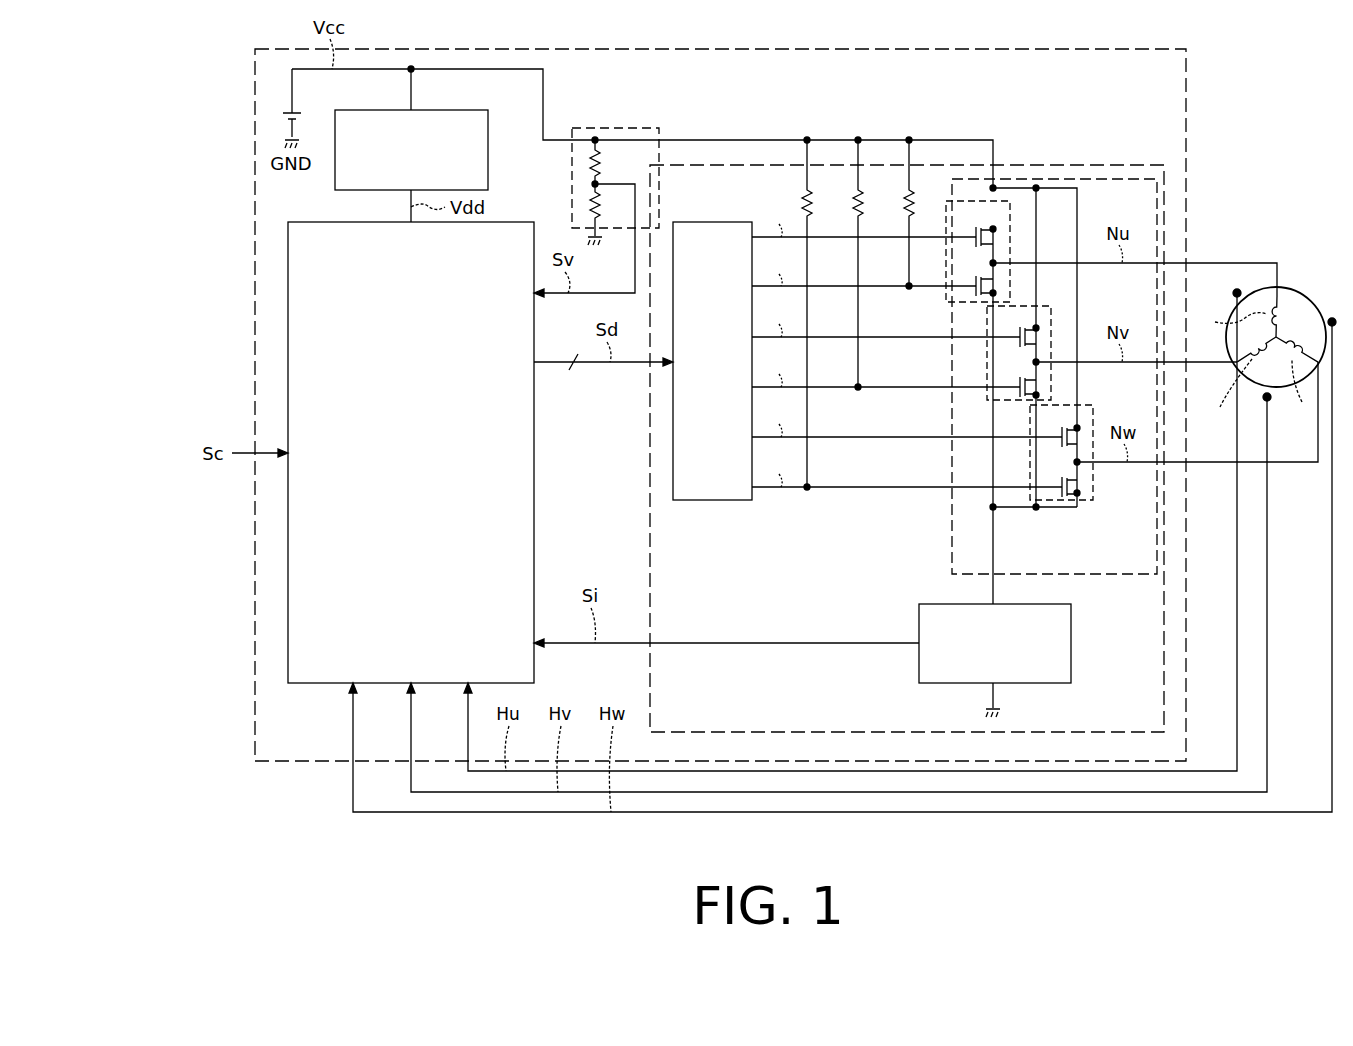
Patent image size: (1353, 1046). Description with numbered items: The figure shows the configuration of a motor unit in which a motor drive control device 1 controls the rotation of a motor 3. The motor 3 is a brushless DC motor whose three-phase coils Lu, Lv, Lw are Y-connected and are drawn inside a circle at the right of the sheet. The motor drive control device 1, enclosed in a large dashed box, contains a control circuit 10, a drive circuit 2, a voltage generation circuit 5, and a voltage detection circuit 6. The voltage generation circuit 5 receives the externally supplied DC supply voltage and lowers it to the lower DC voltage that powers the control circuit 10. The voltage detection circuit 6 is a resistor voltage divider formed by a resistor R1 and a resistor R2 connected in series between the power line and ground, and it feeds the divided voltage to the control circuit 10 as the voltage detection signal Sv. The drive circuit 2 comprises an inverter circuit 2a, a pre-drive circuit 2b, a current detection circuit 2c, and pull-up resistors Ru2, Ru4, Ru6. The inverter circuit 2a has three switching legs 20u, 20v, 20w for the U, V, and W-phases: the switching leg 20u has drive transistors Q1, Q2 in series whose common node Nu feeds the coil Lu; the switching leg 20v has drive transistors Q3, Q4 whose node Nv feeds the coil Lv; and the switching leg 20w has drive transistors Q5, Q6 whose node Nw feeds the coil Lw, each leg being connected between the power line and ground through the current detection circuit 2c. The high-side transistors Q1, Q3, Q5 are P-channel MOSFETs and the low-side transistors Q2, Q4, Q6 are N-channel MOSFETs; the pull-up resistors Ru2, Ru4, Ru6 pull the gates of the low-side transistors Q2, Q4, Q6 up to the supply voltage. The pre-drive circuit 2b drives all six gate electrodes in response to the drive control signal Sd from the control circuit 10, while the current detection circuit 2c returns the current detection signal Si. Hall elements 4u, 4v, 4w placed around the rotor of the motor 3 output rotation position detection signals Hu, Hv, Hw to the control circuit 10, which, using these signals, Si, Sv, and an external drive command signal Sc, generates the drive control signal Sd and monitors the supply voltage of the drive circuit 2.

The motor drive control device 1 is at (1085, 49).
The drive circuit 2 is at (1166, 183).
The inverter circuit 2a is at (1066, 179).
The pre-drive circuit 2b is at (700, 222).
The current detection circuit 2c is at (1071, 645).
The motor 3 is at (1259, 325).
The position sensor (Hall element) for U-phase 4u is at (1235, 291).
The position sensor (Hall element) for V-phase 4v is at (1269, 400).
The position sensor (Hall element) for W-phase 4w is at (1330, 320).
The voltage generation circuit 5 is at (488, 160).
The voltage detection circuit 6 is at (613, 165).
The control circuit 10 is at (325, 222).
The switching leg for U-phase 20u is at (1011, 251).
The switching leg for V-phase 20v is at (1032, 333).
The switching leg for W-phase 20w is at (1075, 432).
The drive transistor Q1 is at (977, 228).
The drive transistor Q2 is at (1010, 228).
The drive transistor Q3 is at (1020, 328).
The drive transistor Q4 is at (1020, 372).
The drive transistor Q5 is at (1062, 428).
The drive transistor Q6 is at (1062, 471).
The resistor R1 is at (607, 210).
The resistor R2 is at (607, 162).
The pull-up resistor Ru2 is at (923, 214).
The pull-up resistor Ru4 is at (872, 265).
The pull-up resistor Ru6 is at (821, 315).
The coil Lu is at (1235, 317).
The coil Lv is at (1242, 385).
The coil Lw is at (1298, 379).